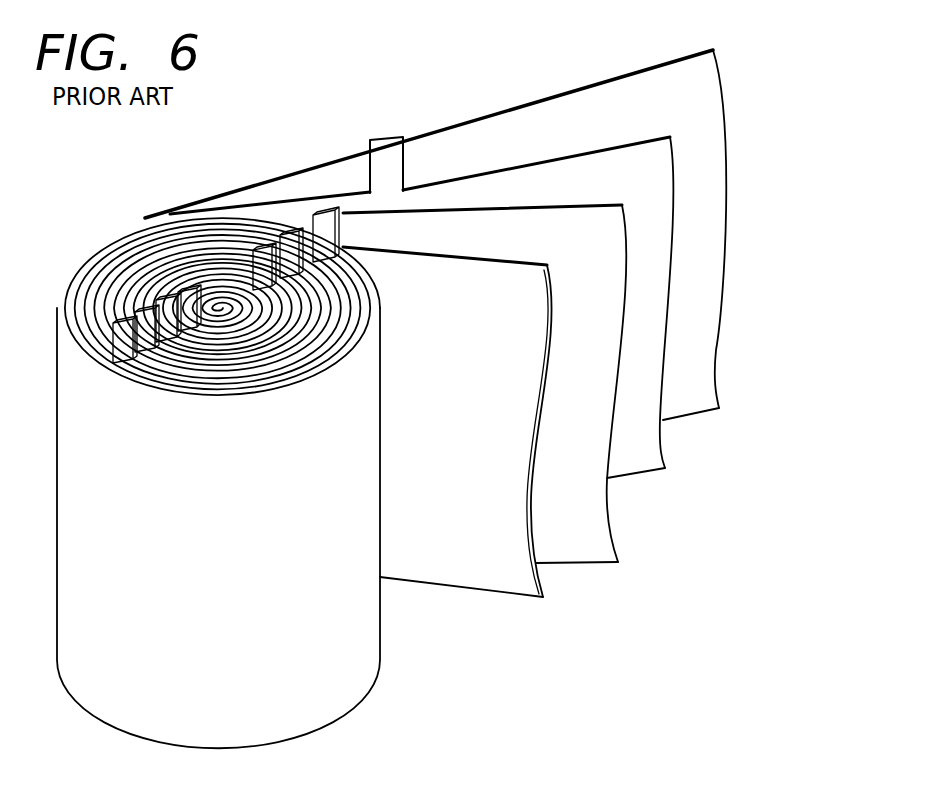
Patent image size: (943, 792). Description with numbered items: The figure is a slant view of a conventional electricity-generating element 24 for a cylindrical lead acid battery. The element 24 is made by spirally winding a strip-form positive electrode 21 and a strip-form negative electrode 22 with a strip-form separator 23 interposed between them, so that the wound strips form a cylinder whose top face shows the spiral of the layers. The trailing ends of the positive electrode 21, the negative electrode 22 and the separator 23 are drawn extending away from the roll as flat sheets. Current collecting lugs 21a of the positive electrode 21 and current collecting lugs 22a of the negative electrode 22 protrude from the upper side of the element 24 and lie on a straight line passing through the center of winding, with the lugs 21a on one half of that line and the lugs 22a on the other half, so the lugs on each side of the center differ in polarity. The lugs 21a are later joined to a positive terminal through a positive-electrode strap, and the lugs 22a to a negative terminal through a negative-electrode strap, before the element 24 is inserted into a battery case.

The positive electrode 21 is at (653, 155).
The current collecting lugs 21a is at (387, 152).
The negative electrode 22 is at (528, 307).
The current collecting lugs 22a is at (186, 337).
The separator 23 is at (606, 222).
The electricity-generating element 24 is at (400, 667).